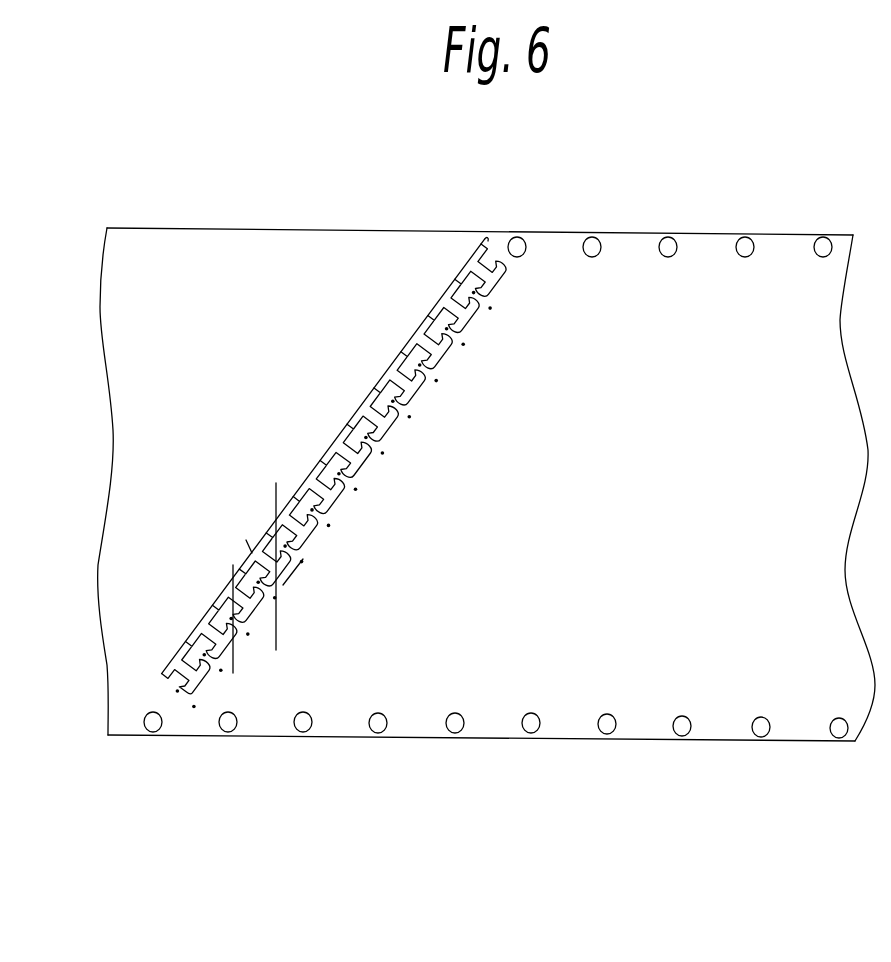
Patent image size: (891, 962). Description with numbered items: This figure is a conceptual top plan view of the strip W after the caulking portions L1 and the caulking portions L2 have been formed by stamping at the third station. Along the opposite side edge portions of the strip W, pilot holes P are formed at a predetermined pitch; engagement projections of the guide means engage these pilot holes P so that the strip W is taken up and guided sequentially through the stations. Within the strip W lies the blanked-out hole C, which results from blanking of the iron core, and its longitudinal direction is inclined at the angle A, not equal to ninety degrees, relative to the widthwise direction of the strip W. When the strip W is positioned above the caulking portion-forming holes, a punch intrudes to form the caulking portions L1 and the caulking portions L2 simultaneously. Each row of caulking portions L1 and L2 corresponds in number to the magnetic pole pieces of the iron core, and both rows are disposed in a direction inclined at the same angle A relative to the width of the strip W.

The strip W is at (222, 280).
The blanked-out hole C is at (432, 305).
The pilot holes P is at (747, 255).
The angle A is at (294, 578).
The caulking portions L1 is at (224, 692).
The caulking portions L2 is at (197, 650).